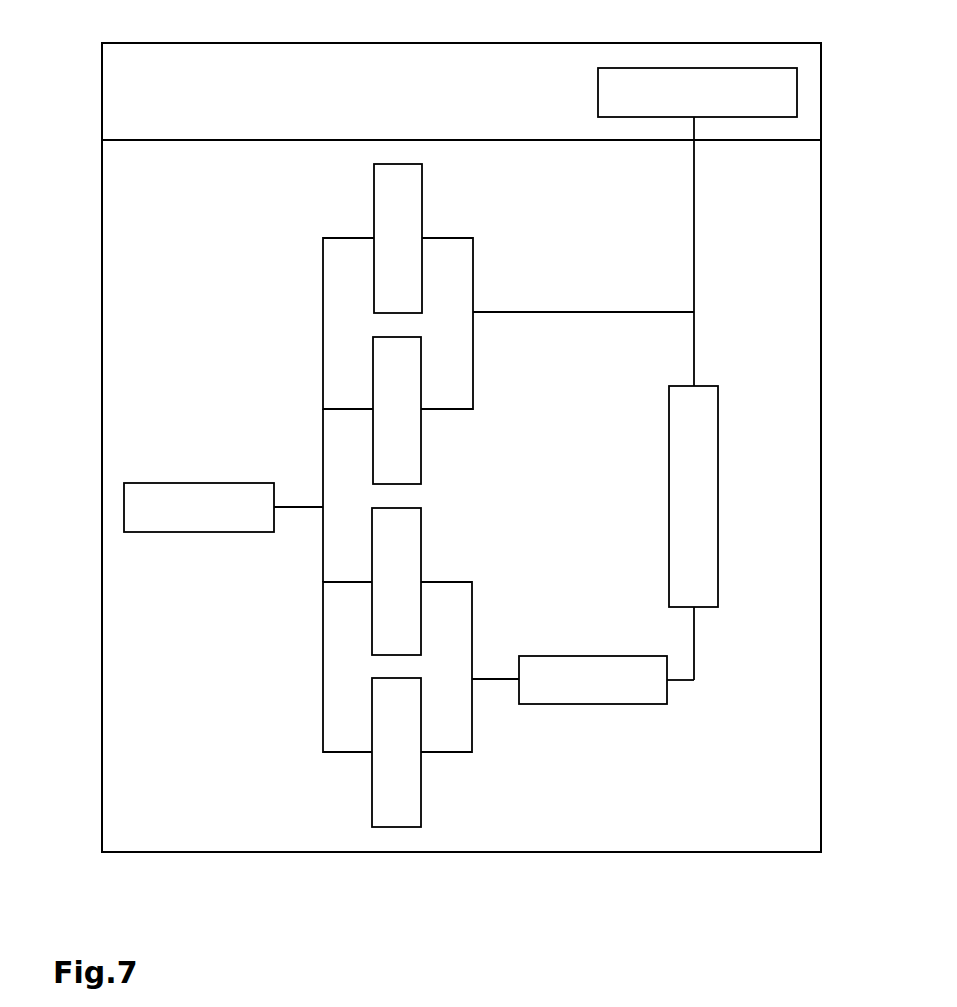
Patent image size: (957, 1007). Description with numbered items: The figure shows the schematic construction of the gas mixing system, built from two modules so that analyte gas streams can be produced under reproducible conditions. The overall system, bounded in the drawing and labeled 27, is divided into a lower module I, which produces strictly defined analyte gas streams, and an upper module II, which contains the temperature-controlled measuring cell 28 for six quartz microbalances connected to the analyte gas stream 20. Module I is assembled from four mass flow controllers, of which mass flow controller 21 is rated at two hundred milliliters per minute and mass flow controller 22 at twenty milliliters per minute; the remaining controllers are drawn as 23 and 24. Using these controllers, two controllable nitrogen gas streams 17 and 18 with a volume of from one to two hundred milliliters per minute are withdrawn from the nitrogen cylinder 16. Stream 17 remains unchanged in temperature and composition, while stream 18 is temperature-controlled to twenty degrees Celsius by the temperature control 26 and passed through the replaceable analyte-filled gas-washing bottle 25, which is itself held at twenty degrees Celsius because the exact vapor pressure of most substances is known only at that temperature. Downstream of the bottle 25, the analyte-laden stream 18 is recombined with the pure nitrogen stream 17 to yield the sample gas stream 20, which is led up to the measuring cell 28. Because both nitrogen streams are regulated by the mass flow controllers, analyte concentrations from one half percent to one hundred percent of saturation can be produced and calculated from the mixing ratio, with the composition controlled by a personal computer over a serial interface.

The nitrogen cylinder 16 is at (188, 495).
The nitrogen gas stream 17 is at (323, 312).
The nitrogen gas stream 18 is at (321, 628).
The analyte gas stream 20 is at (694, 212).
The mass flow controller 21 is at (408, 213).
The mass flow controller 22 is at (398, 373).
The third shifting element 23 is at (396, 546).
The fourth shifting element 24 is at (397, 772).
The gas-washing bottle 25 is at (685, 472).
The temperature control 26 is at (584, 672).
The housing 27 is at (152, 707).
The temperature-controlled measuring cell 28 is at (656, 80).